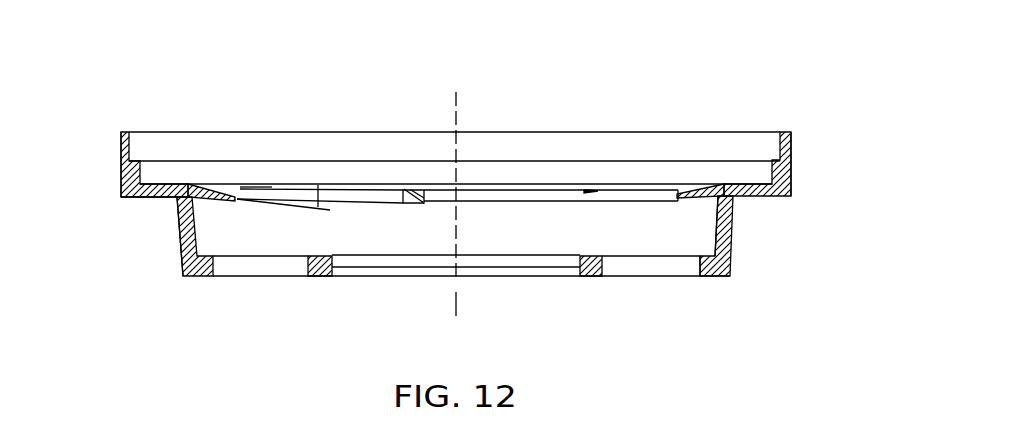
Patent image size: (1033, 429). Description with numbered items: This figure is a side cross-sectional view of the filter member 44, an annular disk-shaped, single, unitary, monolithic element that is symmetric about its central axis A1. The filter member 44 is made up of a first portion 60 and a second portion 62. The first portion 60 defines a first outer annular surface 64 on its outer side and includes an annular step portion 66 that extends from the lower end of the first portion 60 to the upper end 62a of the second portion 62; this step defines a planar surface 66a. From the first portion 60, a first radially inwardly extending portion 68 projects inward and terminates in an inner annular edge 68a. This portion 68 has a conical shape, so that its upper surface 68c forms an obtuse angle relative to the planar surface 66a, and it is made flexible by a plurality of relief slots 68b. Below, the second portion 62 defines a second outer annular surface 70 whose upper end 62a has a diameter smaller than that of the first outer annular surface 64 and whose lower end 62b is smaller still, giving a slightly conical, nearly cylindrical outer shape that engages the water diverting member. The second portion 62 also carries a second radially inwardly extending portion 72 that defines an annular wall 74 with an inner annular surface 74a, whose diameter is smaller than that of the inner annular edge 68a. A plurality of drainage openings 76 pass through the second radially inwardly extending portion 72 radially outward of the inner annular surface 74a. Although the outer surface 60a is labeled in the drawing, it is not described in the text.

The filter member 44 is at (689, 59).
The first portion 60 is at (792, 152).
The outer surface of ring 60a is at (790, 195).
The second portion 62 is at (735, 243).
The upper end of the second portion 62a is at (736, 204).
The lower end of the second outer annular surface 62b is at (733, 274).
The first outer annular surface 64 is at (121, 168).
The annular step portion 66 is at (150, 199).
The planar surface 66a is at (187, 185).
The first radially inwardly extending portion 68 is at (214, 190).
The inner annular edge 68a is at (253, 207).
The relief slots 68b is at (418, 187).
The upper surface 68c is at (355, 190).
The second outer annular surface 70 is at (180, 248).
The second radially inwardly extending portion 72 is at (325, 277).
The annular wall 74 is at (336, 262).
The inner annular surface 74a is at (547, 262).
The drainage openings 76 is at (263, 267).
The central axis A1 is at (457, 301).